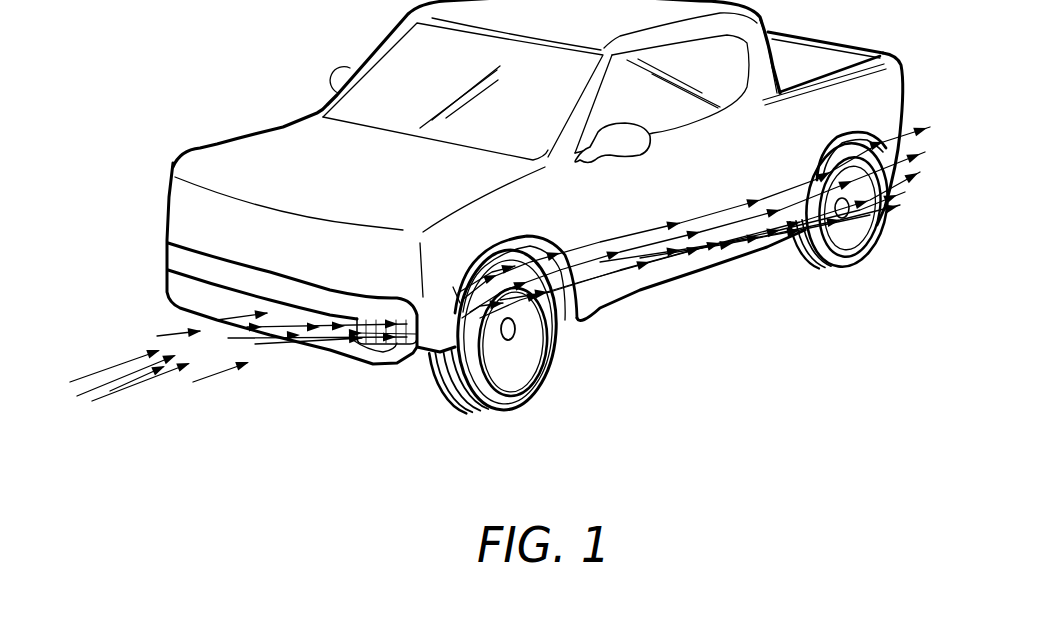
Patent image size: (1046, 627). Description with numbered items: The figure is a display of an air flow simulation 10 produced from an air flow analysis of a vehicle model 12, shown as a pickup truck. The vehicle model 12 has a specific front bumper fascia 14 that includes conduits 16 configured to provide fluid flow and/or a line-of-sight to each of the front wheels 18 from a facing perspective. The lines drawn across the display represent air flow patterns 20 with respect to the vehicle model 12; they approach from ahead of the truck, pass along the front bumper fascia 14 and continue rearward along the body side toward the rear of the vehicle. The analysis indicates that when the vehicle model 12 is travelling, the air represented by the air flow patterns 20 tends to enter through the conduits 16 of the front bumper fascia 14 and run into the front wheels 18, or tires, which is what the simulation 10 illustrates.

The air flow simulation 10 is at (713, 456).
The vehicle model 12 is at (367, 58).
The front bumper fascia 14 is at (156, 300).
The conduits 16 is at (167, 270).
The front wheels 18 is at (553, 350).
The air flow patterns 20 is at (283, 322).